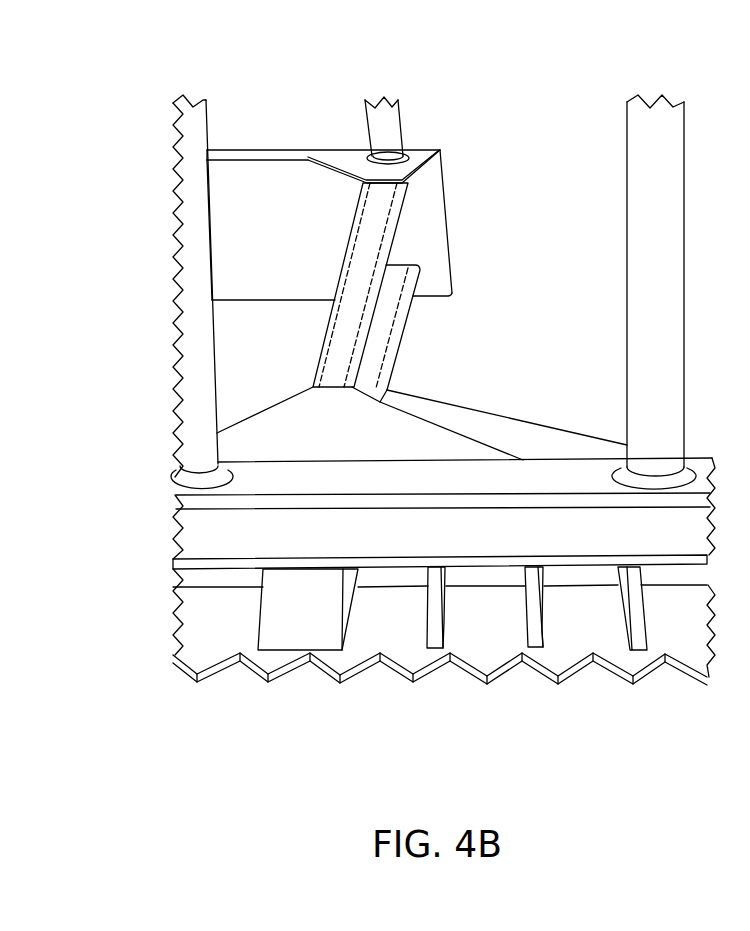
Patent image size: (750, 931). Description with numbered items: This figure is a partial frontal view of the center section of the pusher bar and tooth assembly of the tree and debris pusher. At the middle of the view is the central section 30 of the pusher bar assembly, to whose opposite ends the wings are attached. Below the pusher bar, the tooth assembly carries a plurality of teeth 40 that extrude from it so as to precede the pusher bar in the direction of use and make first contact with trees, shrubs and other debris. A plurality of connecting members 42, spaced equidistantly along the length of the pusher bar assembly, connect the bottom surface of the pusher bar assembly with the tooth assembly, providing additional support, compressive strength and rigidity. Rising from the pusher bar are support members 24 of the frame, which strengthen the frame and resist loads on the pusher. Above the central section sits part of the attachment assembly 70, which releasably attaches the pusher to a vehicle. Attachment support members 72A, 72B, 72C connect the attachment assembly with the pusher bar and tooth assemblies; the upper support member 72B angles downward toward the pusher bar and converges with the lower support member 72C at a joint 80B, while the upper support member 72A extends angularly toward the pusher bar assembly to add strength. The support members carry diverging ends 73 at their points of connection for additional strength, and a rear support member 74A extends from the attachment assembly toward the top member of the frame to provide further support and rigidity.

The support member 24 is at (627, 187).
The central section 30 is at (428, 470).
The teeth 40 is at (560, 657).
The connecting member 42 is at (533, 625).
The attachment assembly 70 is at (452, 265).
The upper attachment support member 72A is at (543, 423).
The upper attachment support member 72B is at (336, 346).
The lower attachment support member 72C is at (392, 310).
The diverging end 73 is at (330, 153).
The rear support member 74A is at (383, 115).
The joint 80B is at (300, 622).